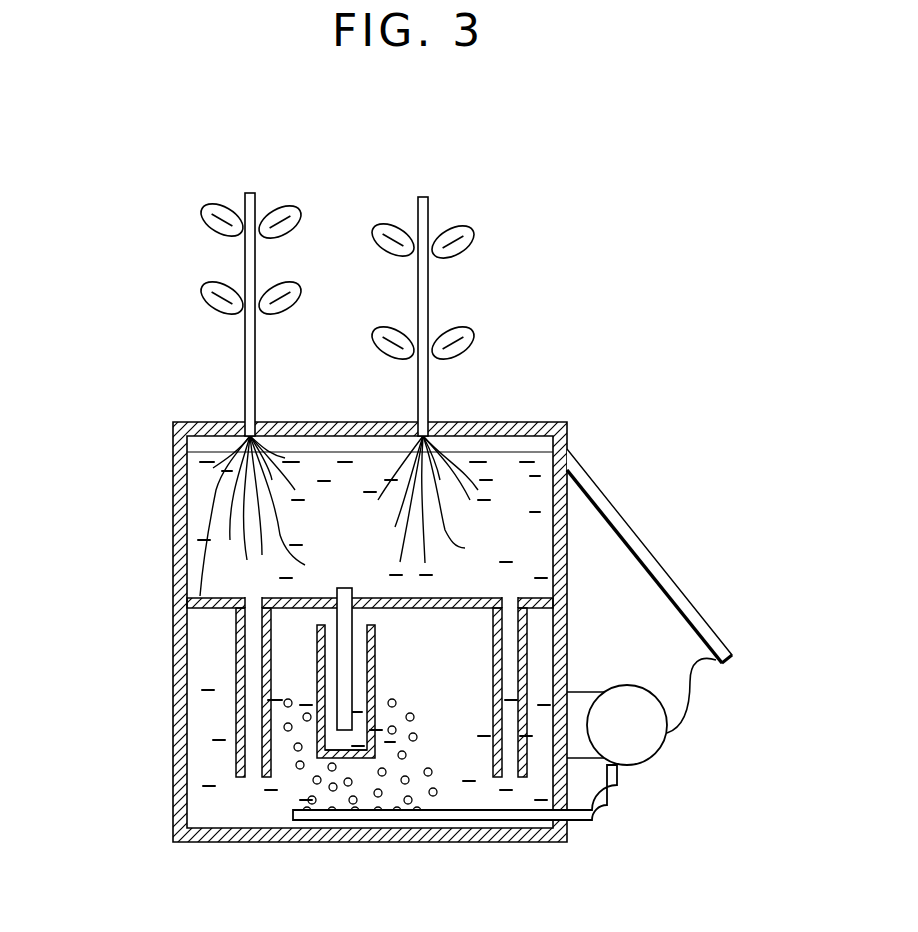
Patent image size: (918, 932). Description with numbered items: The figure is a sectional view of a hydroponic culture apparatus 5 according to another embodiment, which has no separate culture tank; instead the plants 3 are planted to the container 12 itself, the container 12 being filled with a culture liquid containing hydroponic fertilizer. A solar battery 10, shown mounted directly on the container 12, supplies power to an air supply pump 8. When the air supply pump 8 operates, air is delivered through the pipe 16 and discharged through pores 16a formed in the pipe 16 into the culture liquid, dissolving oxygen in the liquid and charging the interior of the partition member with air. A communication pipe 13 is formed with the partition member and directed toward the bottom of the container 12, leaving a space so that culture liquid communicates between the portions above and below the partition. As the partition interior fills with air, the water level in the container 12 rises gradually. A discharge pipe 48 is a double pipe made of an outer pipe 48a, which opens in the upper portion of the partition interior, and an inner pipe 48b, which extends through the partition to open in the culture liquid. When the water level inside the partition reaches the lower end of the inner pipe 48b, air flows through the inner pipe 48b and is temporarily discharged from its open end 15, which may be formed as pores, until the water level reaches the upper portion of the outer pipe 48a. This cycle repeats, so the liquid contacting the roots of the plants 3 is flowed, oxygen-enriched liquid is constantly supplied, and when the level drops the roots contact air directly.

The plants 3 is at (210, 228).
The hydroponic culture apparatus 5 is at (397, 555).
The air supply pump 8 is at (638, 752).
The solar battery 10 is at (630, 540).
The container 12 is at (185, 500).
The communication pipe 13 is at (240, 630).
The open end 15 is at (343, 588).
The pipe 16 is at (443, 841).
The pores 16a is at (300, 816).
The discharge pipe 48 is at (218, 703).
The outer pipe 48a is at (317, 668).
The inner pipe 48b is at (337, 710).